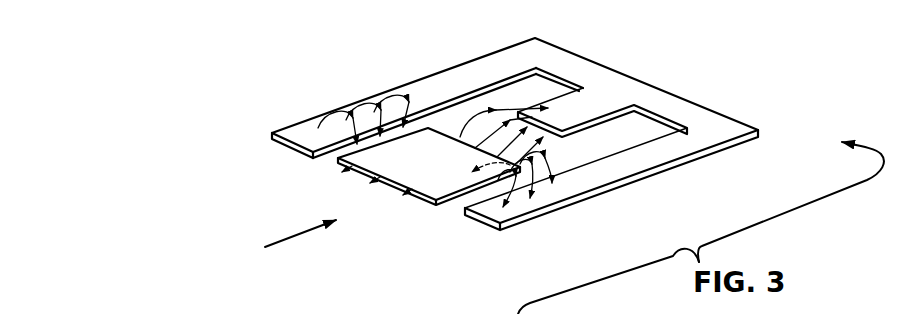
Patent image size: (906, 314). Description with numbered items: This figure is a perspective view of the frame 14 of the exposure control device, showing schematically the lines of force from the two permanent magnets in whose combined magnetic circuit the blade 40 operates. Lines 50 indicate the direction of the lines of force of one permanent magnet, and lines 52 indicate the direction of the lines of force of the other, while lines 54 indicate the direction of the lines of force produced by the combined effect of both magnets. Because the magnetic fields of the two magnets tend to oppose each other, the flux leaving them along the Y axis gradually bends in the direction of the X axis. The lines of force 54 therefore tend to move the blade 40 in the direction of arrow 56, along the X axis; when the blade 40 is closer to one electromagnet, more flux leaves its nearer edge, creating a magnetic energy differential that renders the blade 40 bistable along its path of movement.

The frame 14 is at (624, 47).
The blade 40 is at (432, 203).
The lines of force 50 is at (410, 95).
The lines of force 52 is at (537, 180).
The lines of force 54 is at (527, 108).
The arrow 56 is at (303, 236).